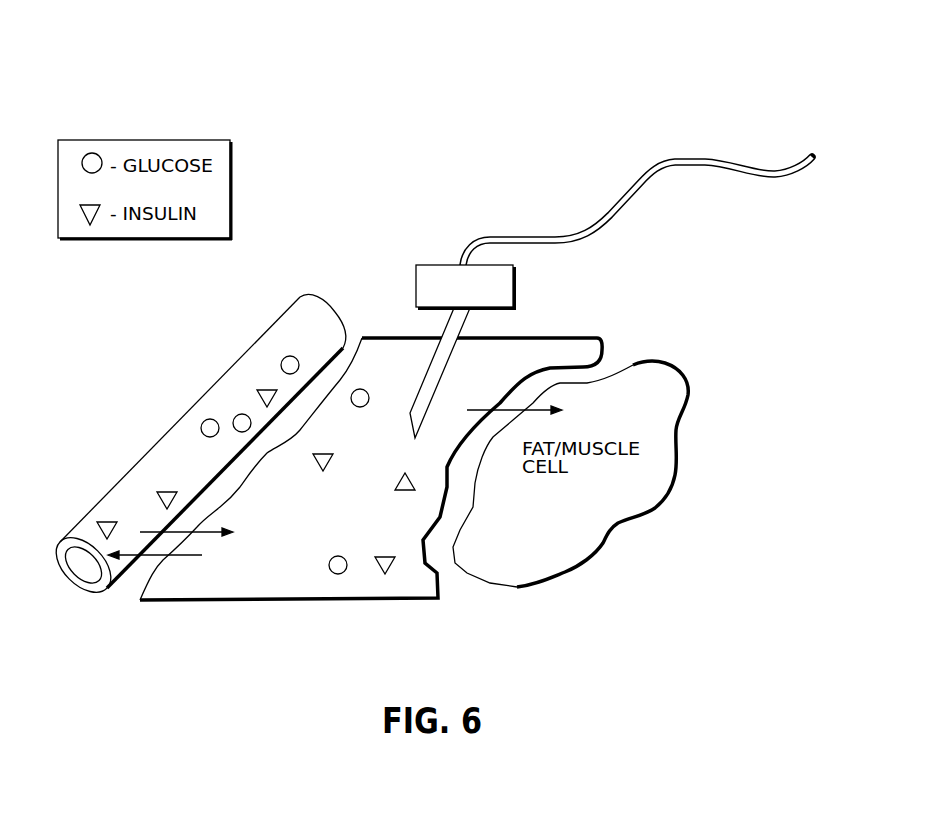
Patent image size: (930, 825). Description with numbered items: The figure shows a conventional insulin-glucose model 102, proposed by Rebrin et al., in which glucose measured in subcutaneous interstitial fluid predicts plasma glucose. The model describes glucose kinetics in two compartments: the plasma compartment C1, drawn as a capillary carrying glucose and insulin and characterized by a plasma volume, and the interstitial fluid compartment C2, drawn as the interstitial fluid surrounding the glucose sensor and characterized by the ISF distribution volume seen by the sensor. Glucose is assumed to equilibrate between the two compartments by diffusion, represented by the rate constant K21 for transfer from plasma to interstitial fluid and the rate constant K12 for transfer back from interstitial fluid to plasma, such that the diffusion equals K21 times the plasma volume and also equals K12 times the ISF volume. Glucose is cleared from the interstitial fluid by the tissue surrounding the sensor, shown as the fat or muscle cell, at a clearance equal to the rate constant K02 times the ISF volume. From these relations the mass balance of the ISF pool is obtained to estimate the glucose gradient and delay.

The insulin-glucose conventional model 102 is at (432, 163).
The plasma glucose compartment C1 is at (196, 448).
The interstitial fluid glucose compartment C2 is at (371, 469).
The plasma-to-ISF diffusion rate constant K21 is at (196, 521).
The ISF-to-plasma diffusion rate constant K12 is at (155, 566).
The ISF glucose clearance rate constant K02 is at (510, 398).